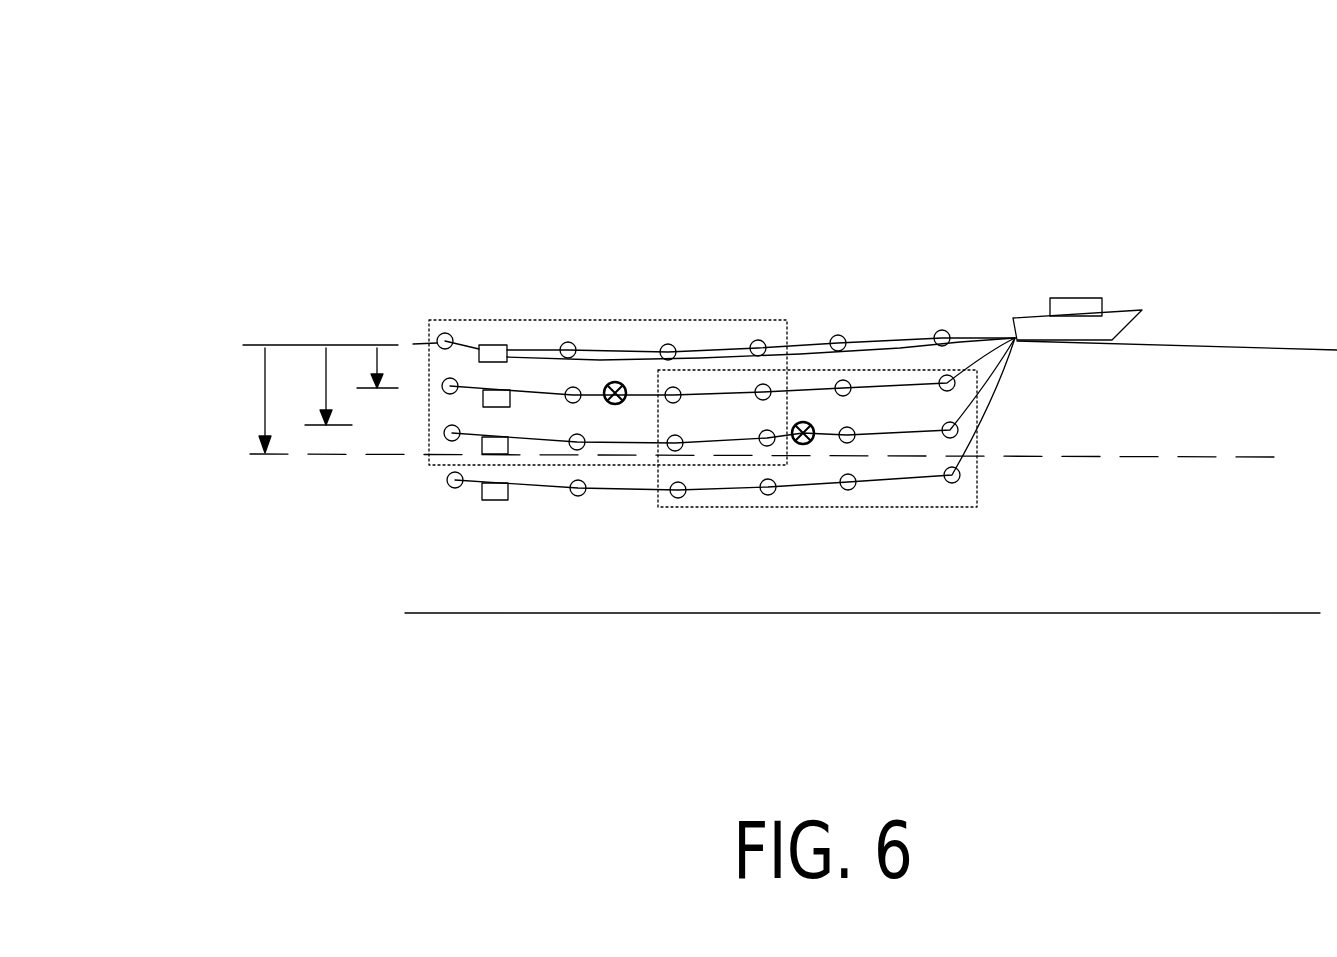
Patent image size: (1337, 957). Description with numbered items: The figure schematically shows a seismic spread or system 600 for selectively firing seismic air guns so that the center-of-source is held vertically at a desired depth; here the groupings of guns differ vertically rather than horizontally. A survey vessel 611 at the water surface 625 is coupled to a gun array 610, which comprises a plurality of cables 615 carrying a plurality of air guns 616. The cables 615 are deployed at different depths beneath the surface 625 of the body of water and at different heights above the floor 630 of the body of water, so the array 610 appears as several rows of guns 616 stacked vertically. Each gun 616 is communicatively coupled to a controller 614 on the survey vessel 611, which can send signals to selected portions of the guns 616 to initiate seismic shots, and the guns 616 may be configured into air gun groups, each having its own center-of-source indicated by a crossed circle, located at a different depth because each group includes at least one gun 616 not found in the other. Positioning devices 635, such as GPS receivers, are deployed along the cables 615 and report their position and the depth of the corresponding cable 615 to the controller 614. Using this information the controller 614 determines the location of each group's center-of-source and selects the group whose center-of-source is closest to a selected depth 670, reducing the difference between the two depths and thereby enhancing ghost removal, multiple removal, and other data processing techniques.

The seismic spread or system 600 is at (1071, 117).
The gun array 610 is at (687, 241).
The survey vessel 611 is at (1125, 308).
The controller 614 is at (1080, 298).
The cables 615 is at (890, 342).
The air guns 616 is at (840, 335).
The surface 625 is at (1247, 345).
The floor 630 is at (1078, 613).
The positioning devices 635 is at (497, 345).
The selected depth 670 is at (263, 413).